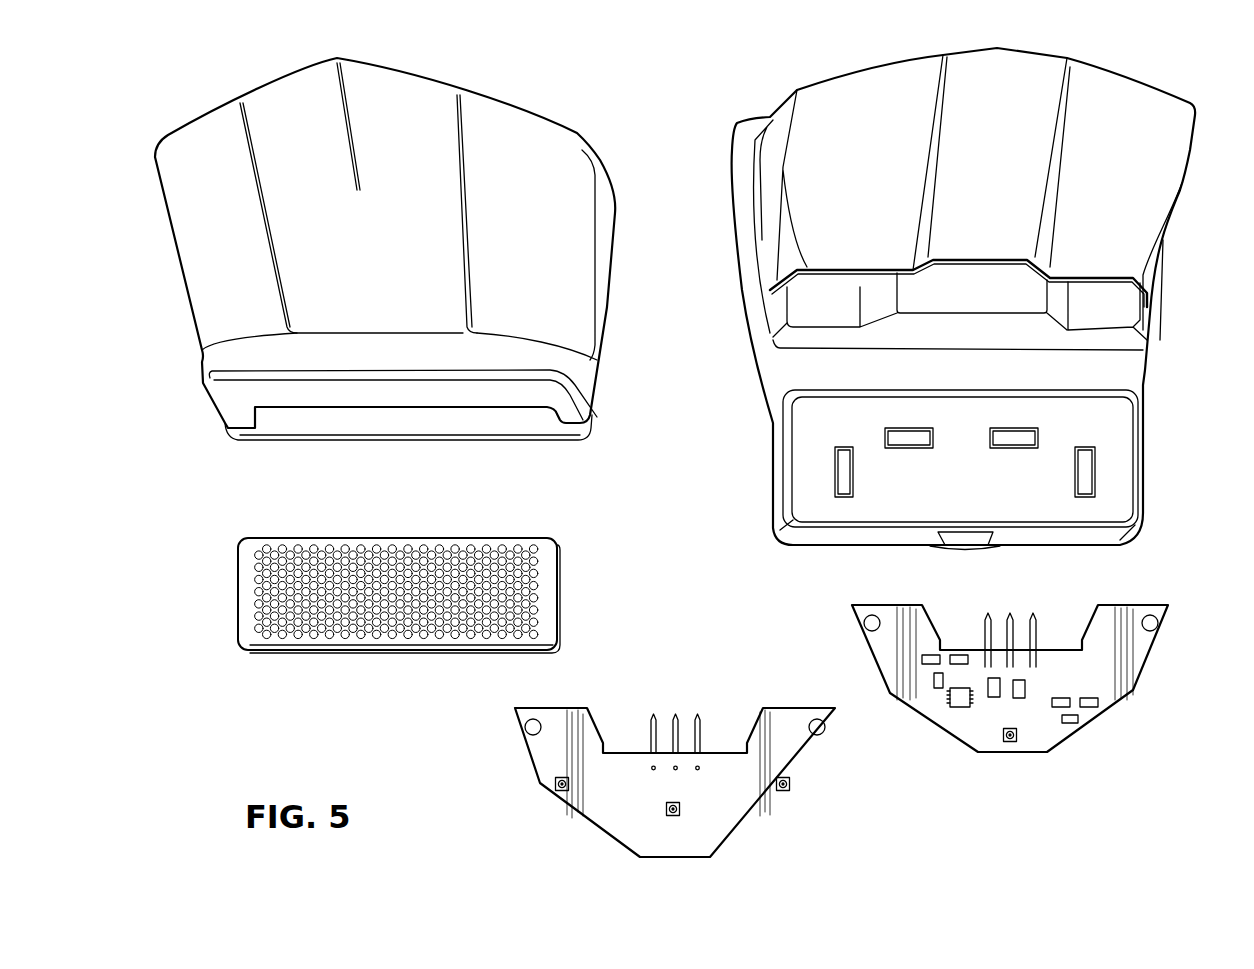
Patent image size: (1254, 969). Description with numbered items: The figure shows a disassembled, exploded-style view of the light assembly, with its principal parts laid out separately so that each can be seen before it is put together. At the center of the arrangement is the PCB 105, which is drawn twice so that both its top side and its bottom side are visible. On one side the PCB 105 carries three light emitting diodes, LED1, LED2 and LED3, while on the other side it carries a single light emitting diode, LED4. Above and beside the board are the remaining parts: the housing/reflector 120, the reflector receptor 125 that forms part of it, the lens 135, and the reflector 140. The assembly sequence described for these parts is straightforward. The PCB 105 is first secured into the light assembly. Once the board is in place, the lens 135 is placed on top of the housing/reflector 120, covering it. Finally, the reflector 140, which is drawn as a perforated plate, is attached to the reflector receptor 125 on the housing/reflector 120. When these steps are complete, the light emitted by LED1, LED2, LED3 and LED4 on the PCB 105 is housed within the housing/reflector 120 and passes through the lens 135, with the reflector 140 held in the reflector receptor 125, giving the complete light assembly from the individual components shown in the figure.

The PCB 105 is at (515, 713).
The housing/reflector 120 is at (1163, 112).
The reflector receptor 125 is at (1132, 447).
The lens 135 is at (185, 148).
The reflector 140 is at (248, 557).
The LED LED1 is at (790, 784).
The LED LED2 is at (680, 810).
The LED LED3 is at (562, 790).
The LED LED4 is at (1012, 741).